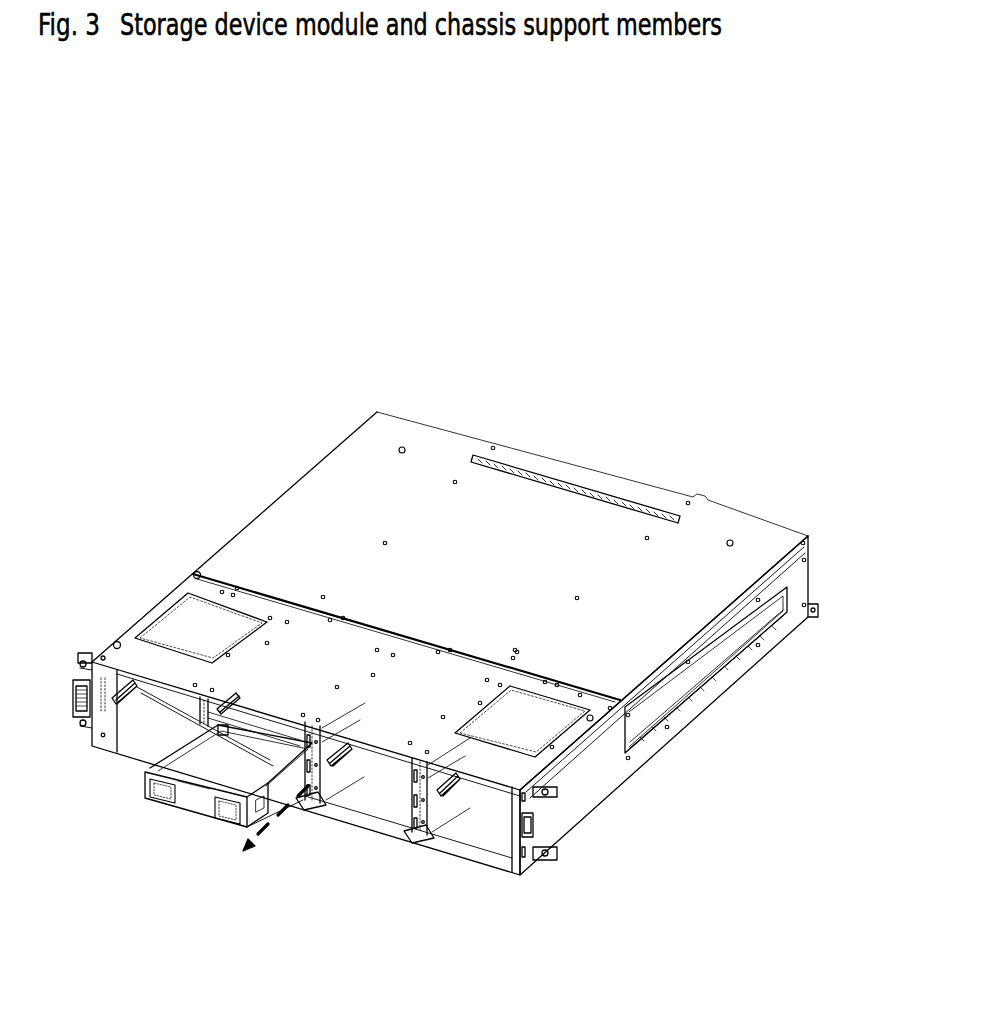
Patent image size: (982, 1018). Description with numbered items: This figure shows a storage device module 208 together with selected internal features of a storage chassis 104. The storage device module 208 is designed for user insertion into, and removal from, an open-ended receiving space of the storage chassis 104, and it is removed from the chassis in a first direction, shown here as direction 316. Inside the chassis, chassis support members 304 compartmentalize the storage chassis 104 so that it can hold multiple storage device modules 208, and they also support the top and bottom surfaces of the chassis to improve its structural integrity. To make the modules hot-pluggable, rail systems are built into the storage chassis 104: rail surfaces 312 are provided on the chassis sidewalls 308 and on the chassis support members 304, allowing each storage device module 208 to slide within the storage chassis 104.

The storage chassis 104 is at (401, 428).
The storage device module 208 is at (190, 813).
The chassis support members 304 is at (320, 808).
The chassis sidewall 308 is at (570, 797).
The rail surfaces 312 is at (115, 683).
The ejection spring force direction 316 is at (270, 832).